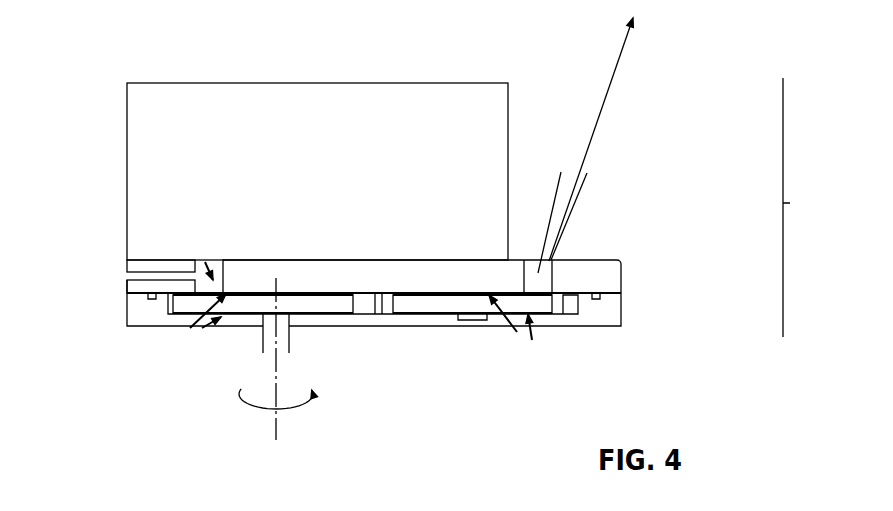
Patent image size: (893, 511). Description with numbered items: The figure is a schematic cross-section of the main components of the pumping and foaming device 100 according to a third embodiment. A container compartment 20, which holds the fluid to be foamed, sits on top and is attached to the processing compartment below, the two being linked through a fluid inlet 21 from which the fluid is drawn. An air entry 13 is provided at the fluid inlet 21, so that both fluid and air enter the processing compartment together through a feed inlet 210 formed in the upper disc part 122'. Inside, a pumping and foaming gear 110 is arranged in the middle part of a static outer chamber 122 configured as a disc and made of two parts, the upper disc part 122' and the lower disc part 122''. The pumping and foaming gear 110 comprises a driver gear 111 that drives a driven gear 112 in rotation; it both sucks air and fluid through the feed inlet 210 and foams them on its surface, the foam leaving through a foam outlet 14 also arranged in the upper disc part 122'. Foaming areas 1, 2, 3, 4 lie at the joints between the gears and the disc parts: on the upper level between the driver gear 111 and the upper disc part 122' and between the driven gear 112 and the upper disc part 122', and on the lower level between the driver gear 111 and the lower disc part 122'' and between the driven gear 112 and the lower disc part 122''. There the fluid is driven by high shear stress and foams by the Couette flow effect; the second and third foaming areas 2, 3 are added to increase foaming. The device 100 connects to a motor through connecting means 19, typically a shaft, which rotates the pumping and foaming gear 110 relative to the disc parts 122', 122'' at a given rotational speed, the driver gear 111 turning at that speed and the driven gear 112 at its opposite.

The container compartment 20 is at (317, 171).
The pumping and foaming device 100 is at (810, 207).
The air entry 13 is at (126, 277).
The pumping and foaming gear 110 is at (386, 293).
The static outer chamber 122 is at (314, 295).
The upper disc part 122' is at (457, 276).
The lower disc part 122'' is at (422, 308).
The driver gear 111 is at (313, 300).
The driven gear 112 is at (425, 307).
The foam outlet 14 is at (584, 184).
The feed inlet 210 is at (208, 292).
The fluid inlet 21 is at (212, 263).
The foaming area 1 is at (200, 323).
The foaming area 2 is at (210, 337).
The foaming area 3 is at (538, 342).
The foaming area 4 is at (505, 329).
The connecting means 19 is at (290, 342).